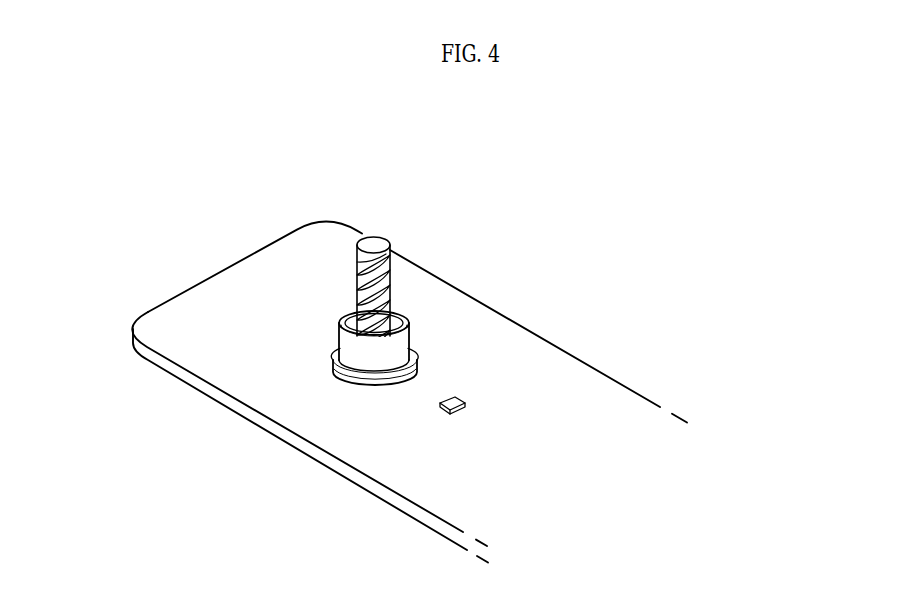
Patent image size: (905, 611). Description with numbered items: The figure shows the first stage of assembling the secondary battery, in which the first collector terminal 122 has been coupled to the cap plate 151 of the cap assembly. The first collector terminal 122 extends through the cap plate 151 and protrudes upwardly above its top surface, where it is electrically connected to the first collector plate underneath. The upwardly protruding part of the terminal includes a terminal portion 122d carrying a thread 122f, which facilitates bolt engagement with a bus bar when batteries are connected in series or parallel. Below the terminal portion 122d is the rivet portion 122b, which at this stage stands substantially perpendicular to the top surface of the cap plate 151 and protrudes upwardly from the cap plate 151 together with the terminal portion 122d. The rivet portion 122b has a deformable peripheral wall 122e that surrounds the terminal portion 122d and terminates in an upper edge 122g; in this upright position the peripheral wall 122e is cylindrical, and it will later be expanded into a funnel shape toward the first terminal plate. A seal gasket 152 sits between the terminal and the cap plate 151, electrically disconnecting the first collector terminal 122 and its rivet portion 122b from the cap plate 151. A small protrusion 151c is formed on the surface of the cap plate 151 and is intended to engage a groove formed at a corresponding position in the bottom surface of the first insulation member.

The cap plate 151 is at (270, 268).
The protrusion 151c is at (457, 399).
The seal gasket 152 is at (372, 377).
The first collector terminal 122 is at (298, 341).
The terminal portion 122d is at (391, 275).
The thread 122f is at (356, 277).
The rivet portion 122b is at (257, 417).
The upper edge 122g is at (338, 322).
The deformable peripheral wall 122e is at (345, 347).